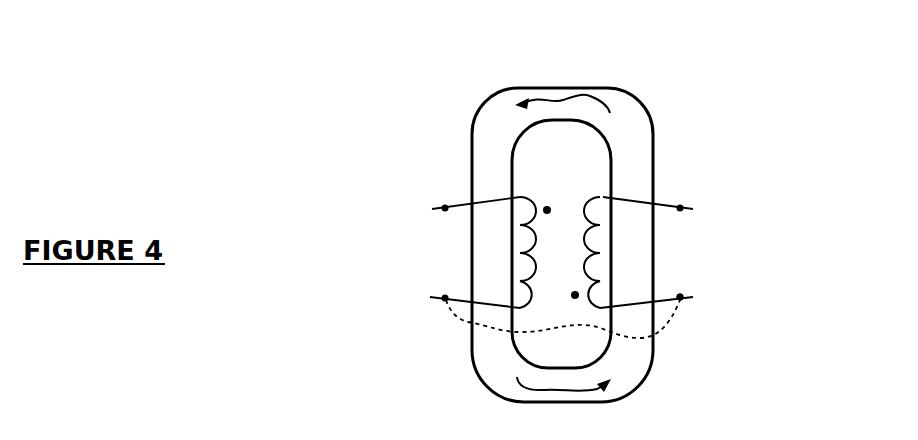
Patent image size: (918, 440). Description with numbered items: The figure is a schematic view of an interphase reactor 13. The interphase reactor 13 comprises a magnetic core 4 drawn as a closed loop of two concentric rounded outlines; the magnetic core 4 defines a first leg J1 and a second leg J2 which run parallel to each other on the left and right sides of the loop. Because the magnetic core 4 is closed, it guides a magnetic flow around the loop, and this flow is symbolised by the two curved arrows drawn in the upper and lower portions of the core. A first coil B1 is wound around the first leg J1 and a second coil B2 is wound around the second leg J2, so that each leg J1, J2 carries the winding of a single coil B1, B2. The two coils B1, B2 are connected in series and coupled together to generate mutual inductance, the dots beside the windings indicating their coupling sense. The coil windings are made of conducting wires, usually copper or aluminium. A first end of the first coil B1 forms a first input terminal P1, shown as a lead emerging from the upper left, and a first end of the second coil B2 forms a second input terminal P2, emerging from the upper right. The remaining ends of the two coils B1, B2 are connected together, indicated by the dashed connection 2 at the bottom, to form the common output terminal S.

The shield / screen (dashed) 2 is at (460, 318).
The magnetic core 4 is at (622, 120).
The interphase reactor 13 is at (690, 90).
The first input terminal P1 is at (445, 208).
The second input terminal P2 is at (680, 208).
The first coil B1 is at (469, 252).
The second coil B2 is at (657, 252).
The first leg J1 is at (470, 352).
The second leg J2 is at (640, 265).
The output terminal S is at (680, 297).